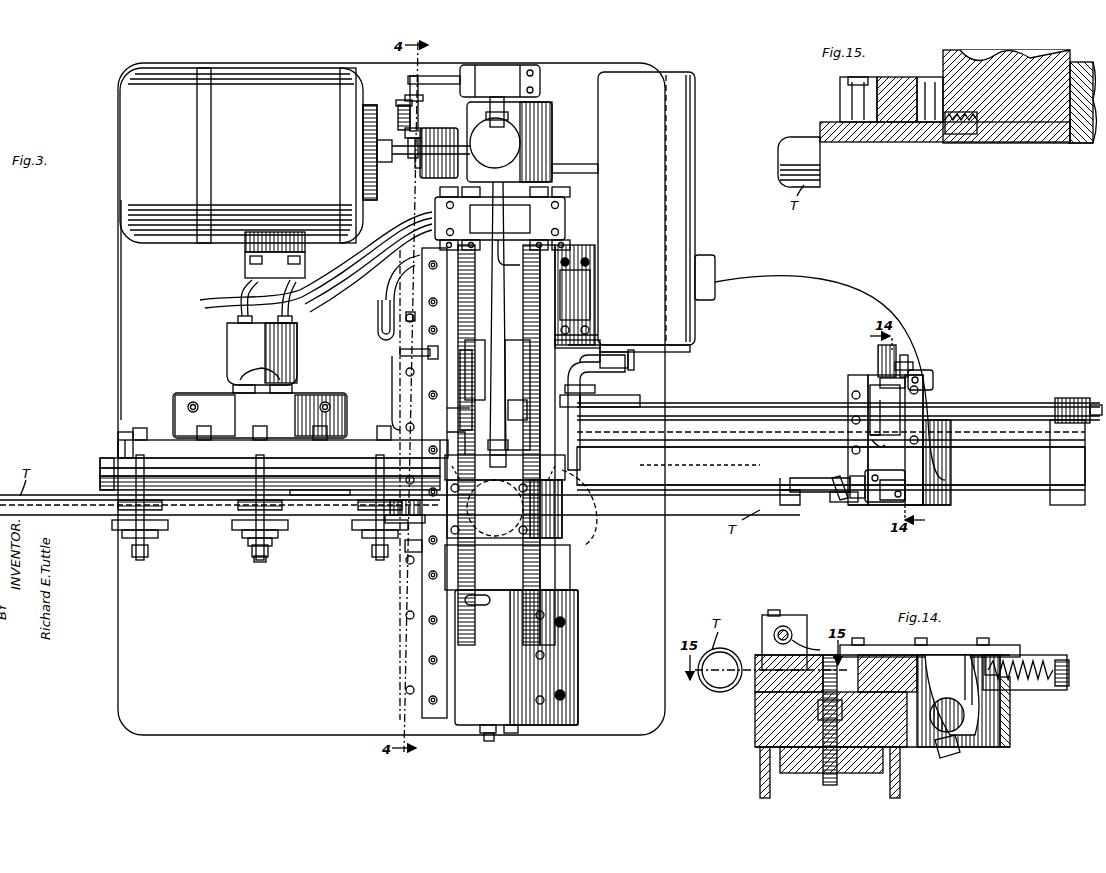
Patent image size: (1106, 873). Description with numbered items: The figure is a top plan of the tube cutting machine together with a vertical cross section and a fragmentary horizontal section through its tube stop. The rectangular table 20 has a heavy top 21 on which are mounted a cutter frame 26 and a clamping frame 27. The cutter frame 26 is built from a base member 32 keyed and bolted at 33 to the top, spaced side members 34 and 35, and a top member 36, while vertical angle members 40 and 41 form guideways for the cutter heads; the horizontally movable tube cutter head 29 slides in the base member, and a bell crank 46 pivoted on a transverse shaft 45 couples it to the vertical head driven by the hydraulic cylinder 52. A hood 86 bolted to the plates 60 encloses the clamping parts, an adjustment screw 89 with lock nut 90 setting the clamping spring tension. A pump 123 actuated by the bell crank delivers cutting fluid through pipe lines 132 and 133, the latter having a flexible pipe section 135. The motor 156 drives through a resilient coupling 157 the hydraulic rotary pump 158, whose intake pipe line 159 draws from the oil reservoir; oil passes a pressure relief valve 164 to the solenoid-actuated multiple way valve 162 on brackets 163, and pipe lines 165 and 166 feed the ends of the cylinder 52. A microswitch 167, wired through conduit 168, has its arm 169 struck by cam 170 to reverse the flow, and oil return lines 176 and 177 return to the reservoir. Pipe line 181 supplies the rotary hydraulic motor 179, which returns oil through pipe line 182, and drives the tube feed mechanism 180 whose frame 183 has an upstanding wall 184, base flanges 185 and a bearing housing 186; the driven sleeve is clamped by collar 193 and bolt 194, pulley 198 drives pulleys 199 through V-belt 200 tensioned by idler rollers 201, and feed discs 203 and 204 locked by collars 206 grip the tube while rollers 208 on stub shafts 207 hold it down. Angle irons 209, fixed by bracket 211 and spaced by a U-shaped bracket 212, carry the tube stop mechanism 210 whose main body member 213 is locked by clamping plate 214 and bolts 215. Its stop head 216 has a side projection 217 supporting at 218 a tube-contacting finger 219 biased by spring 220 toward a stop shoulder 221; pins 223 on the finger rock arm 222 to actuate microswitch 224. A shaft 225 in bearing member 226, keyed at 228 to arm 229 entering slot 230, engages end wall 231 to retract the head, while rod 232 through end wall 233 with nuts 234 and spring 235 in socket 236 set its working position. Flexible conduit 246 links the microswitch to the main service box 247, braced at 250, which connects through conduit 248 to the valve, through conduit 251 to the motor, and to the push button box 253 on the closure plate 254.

In FIG. 3, the rectangular table 20 is at (116, 301).
In FIG. 3, the top 21 is at (135, 322).
In FIG. 3, the cutter frame 26 is at (400, 352).
In FIG. 3, the clamping frame 27 is at (428, 633).
In FIG. 3, the horizontally movable tube cutter head 29 is at (460, 320).
In FIG. 3, the base member 32 is at (560, 295).
In FIG. 3, the bolts 33 is at (582, 266).
In FIG. 3, the side member 34 is at (548, 310).
In FIG. 3, the side member 35 is at (375, 318).
In FIG. 3, the top member 36 is at (562, 470).
In FIG. 3, the angle member 40 is at (584, 510).
In FIG. 3, the angle member 41 is at (423, 545).
In FIG. 3, the transverse shaft 45 is at (443, 439).
In FIG. 3, the bell crank 46 is at (447, 405).
In FIG. 3, the hydraulic cylinder 52 is at (495, 520).
In FIG. 3, the plates 60 is at (410, 528).
In FIG. 3, the hood 86 is at (520, 672).
In FIG. 3, the adjustment screw 89 is at (490, 735).
In FIG. 3, the lock nut 90 is at (510, 733).
In FIG. 3, the pump 123 is at (512, 448).
In FIG. 3, the pipe line 132 is at (462, 378).
In FIG. 3, the pipe line 133 is at (595, 400).
In FIG. 3, the flexible pipe section 135 is at (583, 362).
In FIG. 3, the motor 156 is at (262, 82).
In FIG. 3, the resilient coupling 157 is at (448, 118).
In FIG. 3, the hydraulic rotary pump 158 is at (525, 140).
In FIG. 3, the pipe line 159 is at (382, 300).
In FIG. 3, the solenoid-actuated multiple way valve 162 is at (515, 220).
In FIG. 3, the brackets 163 is at (425, 193).
In FIG. 3, the pressure relief valve 164 is at (490, 68).
In FIG. 3, the pipe line 165 is at (490, 445).
In FIG. 3, the pipe line 166 is at (560, 325).
In FIG. 3, the microswitch 167 is at (580, 285).
In FIG. 3, the conduit 168 is at (545, 262).
In FIG. 3, the arm 169 is at (456, 282).
In FIG. 3, the cam 170 is at (582, 388).
In FIG. 3, the oil return line 176 is at (425, 203).
In FIG. 3, the oil return line 177 is at (440, 75).
In FIG. 3, the rotary hydraulic motor 179 is at (245, 340).
In FIG. 3, the tube feed mechanism 180 is at (178, 398).
In FIG. 3, the pipe line 181 is at (240, 302).
In FIG. 3, the oil return pipe line 182 is at (296, 306).
In FIG. 3, the frame 183 is at (162, 436).
In FIG. 3, the upstanding wall 184 is at (116, 438).
In FIG. 3, the base flanges 185 is at (205, 402).
In FIG. 3, the bearing housing 186 is at (290, 408).
In FIG. 3, the collar 193 is at (272, 542).
In FIG. 3, the bolt 194 is at (260, 562).
In FIG. 3, the pulley 198 is at (232, 455).
In FIG. 3, the pulleys 199 is at (120, 456).
In FIG. 3, the V-belt 200 is at (235, 455).
In FIG. 3, the idler rollers 201 is at (198, 458).
In FIG. 3, the feed disc 203 is at (104, 480).
In FIG. 3, the feed disc 204 is at (112, 530).
In FIG. 3, the collars 206 is at (158, 535).
In FIG. 3, the stub shafts 207 is at (240, 528).
In FIG. 3, the rollers 208 is at (305, 505).
In FIG. 3, the angle irons 209 is at (760, 440).
In FIG. 14, the angle irons 209 is at (760, 772).
In FIG. 3, the tube stop mechanism 210 is at (938, 508).
In FIG. 15, the tube stop mechanism 210 is at (1082, 148).
In FIG. 14, the tube stop mechanism 210 is at (754, 738).
In FIG. 3, the bracket 211 is at (700, 465).
In FIG. 3, the U-shaped bracket 212 is at (1062, 505).
In FIG. 14, the U-shaped bracket 212 is at (754, 716).
In FIG. 3, the main body member 213 is at (920, 410).
In FIG. 15, the main body member 213 is at (1052, 142).
In FIG. 14, the clamping plate 214 is at (794, 765).
In FIG. 3, the bolts 215 is at (870, 498).
In FIG. 14, the bolts 215 is at (835, 782).
In FIG. 3, the stop head 216 is at (862, 410).
In FIG. 15, the stop head 216 is at (1003, 142).
In FIG. 14, the stop head 216 is at (882, 655).
In FIG. 3, the side projection 217 is at (815, 475).
In FIG. 15, the side projection 217 is at (840, 96).
In FIG. 15, the slide support 218 is at (842, 106).
In FIG. 3, the tube-contacting finger 219 is at (800, 505).
In FIG. 15, the tube-contacting finger 219 is at (888, 143).
In FIG. 14, the tube-contacting finger 219 is at (750, 656).
In FIG. 15, the spring 220 is at (932, 142).
In FIG. 3, the stop shoulder 221 is at (855, 500).
In FIG. 15, the stop shoulder 221 is at (957, 140).
In FIG. 3, the arm 222 is at (836, 498).
In FIG. 14, the arm 222 is at (782, 615).
In FIG. 3, the pins 223 is at (845, 503).
In FIG. 14, the pins 223 is at (768, 614).
In FIG. 3, the microswitch 224 is at (890, 503).
In FIG. 14, the microswitch 224 is at (808, 628).
In FIG. 3, the shaft 225 is at (728, 396).
In FIG. 14, the shaft 225 is at (960, 730).
In FIG. 3, the bearing member 226 is at (1058, 405).
In FIG. 14, the key 228 is at (940, 756).
In FIG. 3, the arm 229 is at (878, 392).
In FIG. 14, the arm 229 is at (942, 658).
In FIG. 3, the slot 230 is at (897, 432).
In FIG. 14, the slot 230 is at (972, 660).
In FIG. 3, the end wall 231 is at (878, 380).
In FIG. 14, the end wall 231 is at (995, 656).
In FIG. 3, the rod 232 is at (908, 355).
In FIG. 3, the end wall 233 is at (935, 378).
In FIG. 14, the end wall 233 is at (1010, 722).
In FIG. 3, the adjustment and lock nuts 234 is at (914, 365).
In FIG. 3, the spring 235 is at (876, 355).
In FIG. 14, the spring 235 is at (1048, 650).
In FIG. 14, the socket 236 is at (1058, 686).
In FIG. 3, the flexible conduit 246 is at (835, 300).
In FIG. 14, the flexible conduit 246 is at (830, 640).
In FIG. 3, the main service box 247 is at (665, 208).
In FIG. 3, the conduit 248 is at (580, 178).
In FIG. 3, the brace 250 is at (595, 340).
In FIG. 3, the conduit 251 is at (384, 282).
In FIG. 3, the push button box 253 is at (550, 576).
In FIG. 3, the closure plate 254 is at (482, 538).